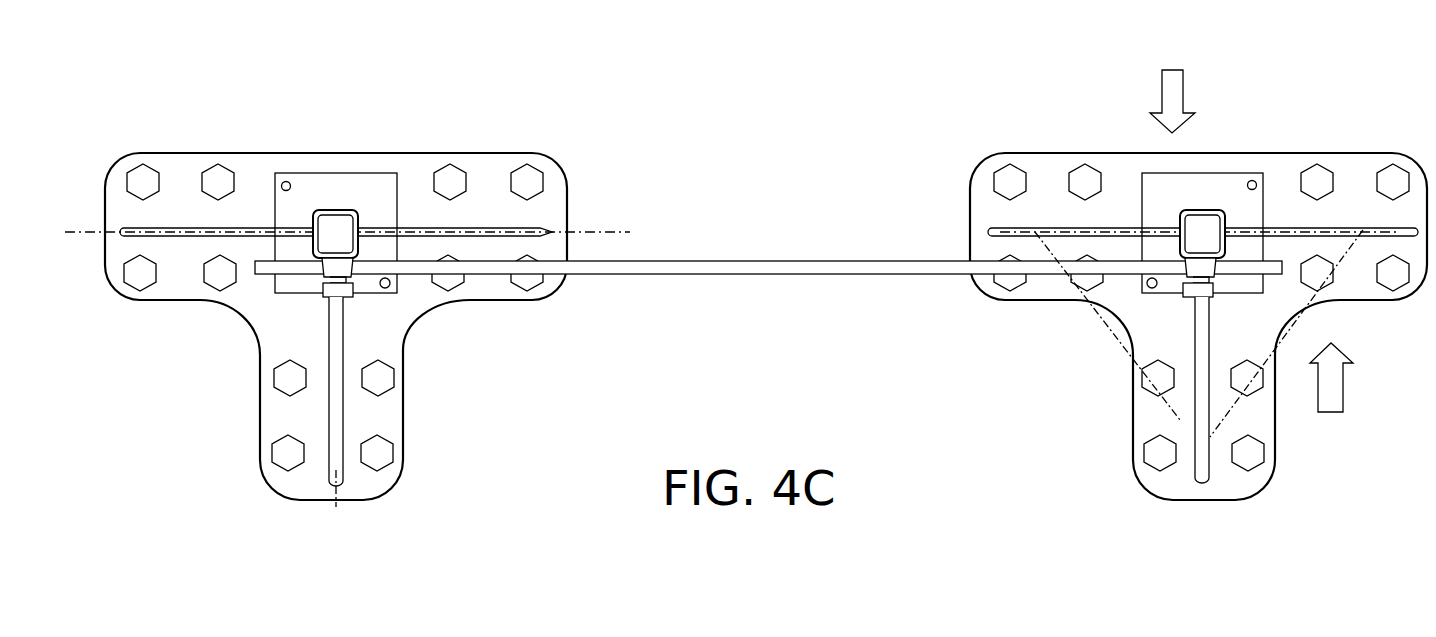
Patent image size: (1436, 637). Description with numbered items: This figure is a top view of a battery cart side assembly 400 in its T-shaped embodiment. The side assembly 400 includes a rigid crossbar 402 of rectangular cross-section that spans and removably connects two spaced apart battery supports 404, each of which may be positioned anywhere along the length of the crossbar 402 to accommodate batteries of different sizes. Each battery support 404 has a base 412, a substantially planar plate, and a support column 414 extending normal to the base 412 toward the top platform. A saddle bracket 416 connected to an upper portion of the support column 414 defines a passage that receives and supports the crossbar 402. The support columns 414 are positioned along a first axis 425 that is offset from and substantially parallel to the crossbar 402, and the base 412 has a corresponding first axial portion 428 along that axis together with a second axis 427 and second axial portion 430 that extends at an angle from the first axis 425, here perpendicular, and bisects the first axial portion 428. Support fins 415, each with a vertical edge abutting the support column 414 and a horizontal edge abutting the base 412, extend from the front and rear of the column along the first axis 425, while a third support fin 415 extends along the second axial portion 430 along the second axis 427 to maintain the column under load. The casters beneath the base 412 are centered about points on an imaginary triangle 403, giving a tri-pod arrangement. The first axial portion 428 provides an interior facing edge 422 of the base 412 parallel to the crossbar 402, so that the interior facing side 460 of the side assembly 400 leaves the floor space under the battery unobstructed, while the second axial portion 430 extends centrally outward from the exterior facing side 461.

The side assembly 400 is at (768, 125).
The rigid crossbar 402 is at (773, 262).
The imaginary triangle 403 is at (1087, 305).
The battery support 404 is at (195, 338).
The base 412 is at (493, 173).
The support column 414 is at (345, 210).
The support fin 415 is at (253, 226).
The saddle bracket 416 is at (358, 292).
The interior facing edge 422 is at (367, 158).
The first axis 425 is at (580, 228).
The second axis 427 is at (340, 497).
The first axial portion 428 is at (272, 173).
The second axial portion 430 is at (380, 417).
The interior facing side 460 is at (1173, 103).
The exterior facing side 461 is at (1332, 404).